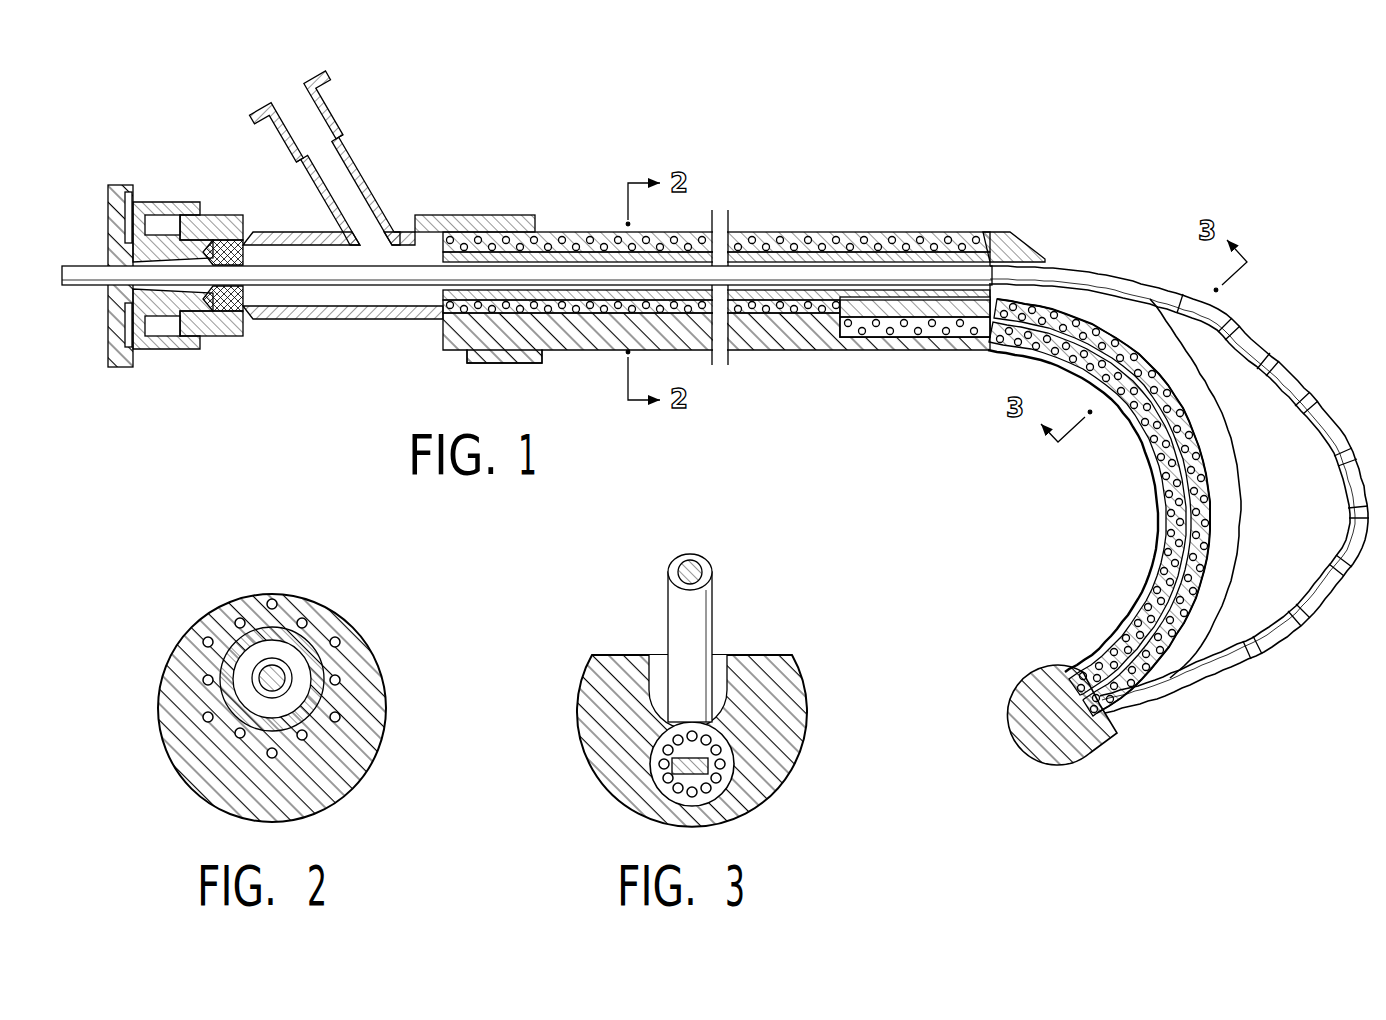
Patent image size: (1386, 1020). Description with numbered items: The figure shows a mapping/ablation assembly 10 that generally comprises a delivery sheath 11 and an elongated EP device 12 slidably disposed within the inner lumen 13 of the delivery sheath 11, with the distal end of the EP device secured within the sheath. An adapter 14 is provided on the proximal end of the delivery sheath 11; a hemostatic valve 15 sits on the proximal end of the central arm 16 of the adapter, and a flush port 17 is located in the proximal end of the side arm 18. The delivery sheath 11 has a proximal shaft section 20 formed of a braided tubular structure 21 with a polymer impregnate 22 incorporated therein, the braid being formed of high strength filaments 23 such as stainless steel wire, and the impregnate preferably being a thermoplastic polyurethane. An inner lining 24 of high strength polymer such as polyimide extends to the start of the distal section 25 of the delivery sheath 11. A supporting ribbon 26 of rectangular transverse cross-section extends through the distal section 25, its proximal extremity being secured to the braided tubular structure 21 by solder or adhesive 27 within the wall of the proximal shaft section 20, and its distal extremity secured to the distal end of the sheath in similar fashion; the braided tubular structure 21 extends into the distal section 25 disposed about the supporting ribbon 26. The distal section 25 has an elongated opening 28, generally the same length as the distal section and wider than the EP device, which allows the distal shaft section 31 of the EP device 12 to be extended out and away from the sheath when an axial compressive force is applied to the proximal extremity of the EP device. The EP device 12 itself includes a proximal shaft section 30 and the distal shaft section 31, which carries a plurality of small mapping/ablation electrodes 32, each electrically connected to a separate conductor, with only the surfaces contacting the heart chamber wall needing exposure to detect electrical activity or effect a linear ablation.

In FIG. 1, the mapping/ablation assembly 10 is at (1092, 177).
In FIG. 1, the delivery sheath 11 is at (744, 257).
In FIG. 2, the delivery sheath 11 is at (196, 795).
In FIG. 1, the elongated EP device 12 is at (1120, 268).
In FIG. 2, the elongated EP device 12 is at (262, 686).
In FIG. 3, the elongated EP device 12 is at (713, 612).
In FIG. 1, the inner lumen 13 is at (848, 258).
In FIG. 2, the inner lumen 13 is at (246, 665).
In FIG. 1, the adapter 14 is at (331, 321).
In FIG. 1, the hemostatic valve 15 is at (215, 315).
In FIG. 1, the central arm 16 is at (298, 232).
In FIG. 1, the flush port 17 is at (302, 108).
In FIG. 1, the side arm 18 is at (352, 165).
In FIG. 1, the proximal shaft section 20 is at (598, 340).
In FIG. 1, the braided tubular structure 21 is at (608, 236).
In FIG. 2, the braided tubular structure 21 is at (342, 640).
In FIG. 1, the polymer impregnate 22 is at (716, 338).
In FIG. 2, the polymer impregnate 22 is at (336, 750).
In FIG. 2, the high strength filaments 23 is at (305, 618).
In FIG. 1, the inner lining 24 is at (764, 240).
In FIG. 2, the inner lining 24 is at (321, 690).
In FIG. 1, the distal section 25 is at (1153, 487).
In FIG. 3, the distal section 25 is at (773, 770).
In FIG. 1, the supporting ribbon 26 is at (1188, 522).
In FIG. 3, the supporting ribbon 26 is at (669, 773).
In FIG. 1, the solder or adhesive 27 is at (893, 335).
In FIG. 1, the elongated opening 28 is at (1222, 457).
In FIG. 3, the elongated opening 28 is at (664, 670).
In FIG. 1, the proximal shaft section 30 is at (528, 266).
In FIG. 1, the distal shaft section 31 is at (1323, 398).
In FIG. 1, the mapping/ablation electrodes 32 is at (1266, 343).